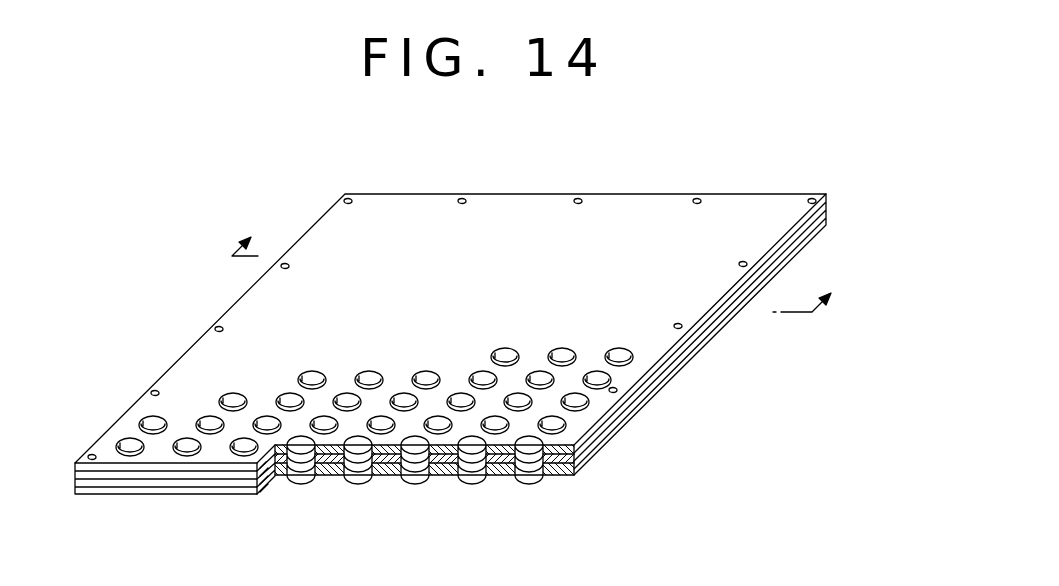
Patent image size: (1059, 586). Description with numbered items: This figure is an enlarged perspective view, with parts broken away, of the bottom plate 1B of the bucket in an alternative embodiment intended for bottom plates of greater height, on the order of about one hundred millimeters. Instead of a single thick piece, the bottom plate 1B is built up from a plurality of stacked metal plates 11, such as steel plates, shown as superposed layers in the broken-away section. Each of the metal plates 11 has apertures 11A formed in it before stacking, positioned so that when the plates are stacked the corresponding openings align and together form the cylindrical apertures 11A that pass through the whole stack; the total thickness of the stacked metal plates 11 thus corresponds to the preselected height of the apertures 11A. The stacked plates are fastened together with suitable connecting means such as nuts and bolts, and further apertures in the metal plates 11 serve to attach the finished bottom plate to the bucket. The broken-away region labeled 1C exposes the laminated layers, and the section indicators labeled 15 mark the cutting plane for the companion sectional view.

The bottom plate 1B is at (631, 272).
The apertures 11A is at (620, 358).
The stacked metal plates 11 is at (606, 425).
The cut section of plate (3B1, 6B1, 9B1) 1C is at (470, 458).
The section line for FIG. 15 is at (543, 255).